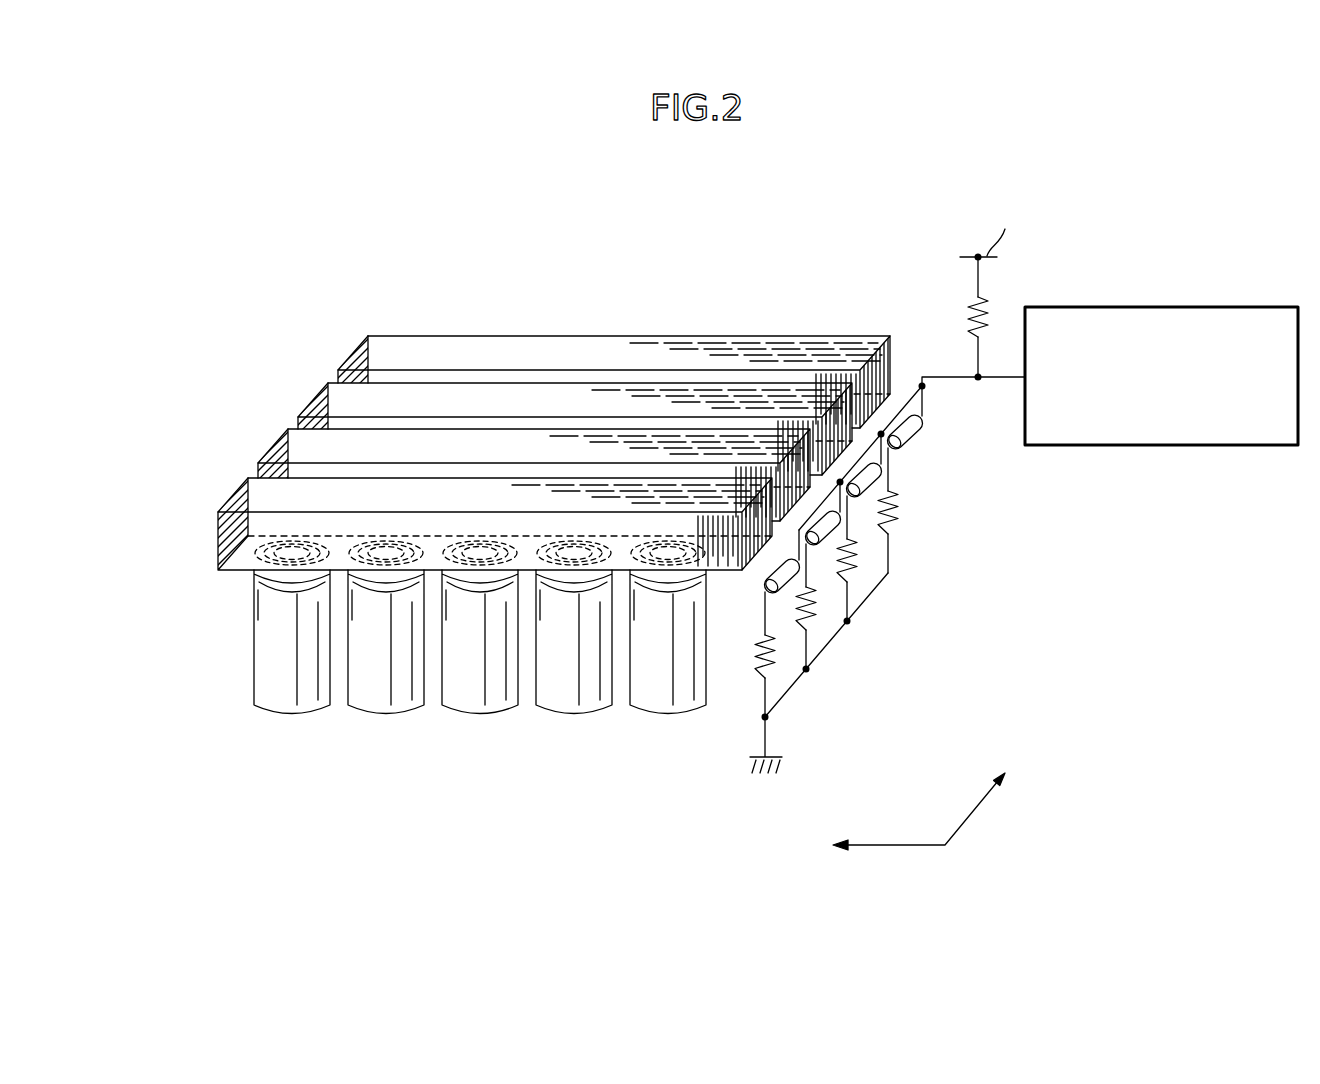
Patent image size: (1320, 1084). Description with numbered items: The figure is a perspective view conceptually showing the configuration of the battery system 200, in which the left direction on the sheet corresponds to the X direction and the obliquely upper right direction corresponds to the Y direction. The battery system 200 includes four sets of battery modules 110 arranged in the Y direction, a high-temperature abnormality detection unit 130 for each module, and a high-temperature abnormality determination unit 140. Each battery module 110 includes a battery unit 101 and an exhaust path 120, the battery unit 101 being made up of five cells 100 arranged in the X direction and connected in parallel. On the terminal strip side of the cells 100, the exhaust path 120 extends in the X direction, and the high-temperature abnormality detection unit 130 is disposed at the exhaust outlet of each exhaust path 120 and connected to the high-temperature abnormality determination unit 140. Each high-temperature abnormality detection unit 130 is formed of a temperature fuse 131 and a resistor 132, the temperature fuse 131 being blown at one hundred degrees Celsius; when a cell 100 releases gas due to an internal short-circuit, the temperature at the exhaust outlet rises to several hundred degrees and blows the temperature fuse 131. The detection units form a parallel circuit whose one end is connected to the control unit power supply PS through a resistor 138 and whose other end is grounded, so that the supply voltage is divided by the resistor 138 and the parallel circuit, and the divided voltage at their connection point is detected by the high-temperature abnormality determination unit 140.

The cell 100 is at (295, 714).
The battery unit 101 is at (480, 682).
The battery module 110 is at (475, 447).
The exhaust path 120 is at (440, 335).
The high-temperature abnormality detection unit 130 is at (914, 574).
The temperature fuse 131 is at (912, 441).
The resistor 132 is at (898, 508).
The resistor 138 is at (968, 299).
The high-temperature abnormality determination unit 140 is at (1242, 307).
The battery system 200 is at (921, 173).